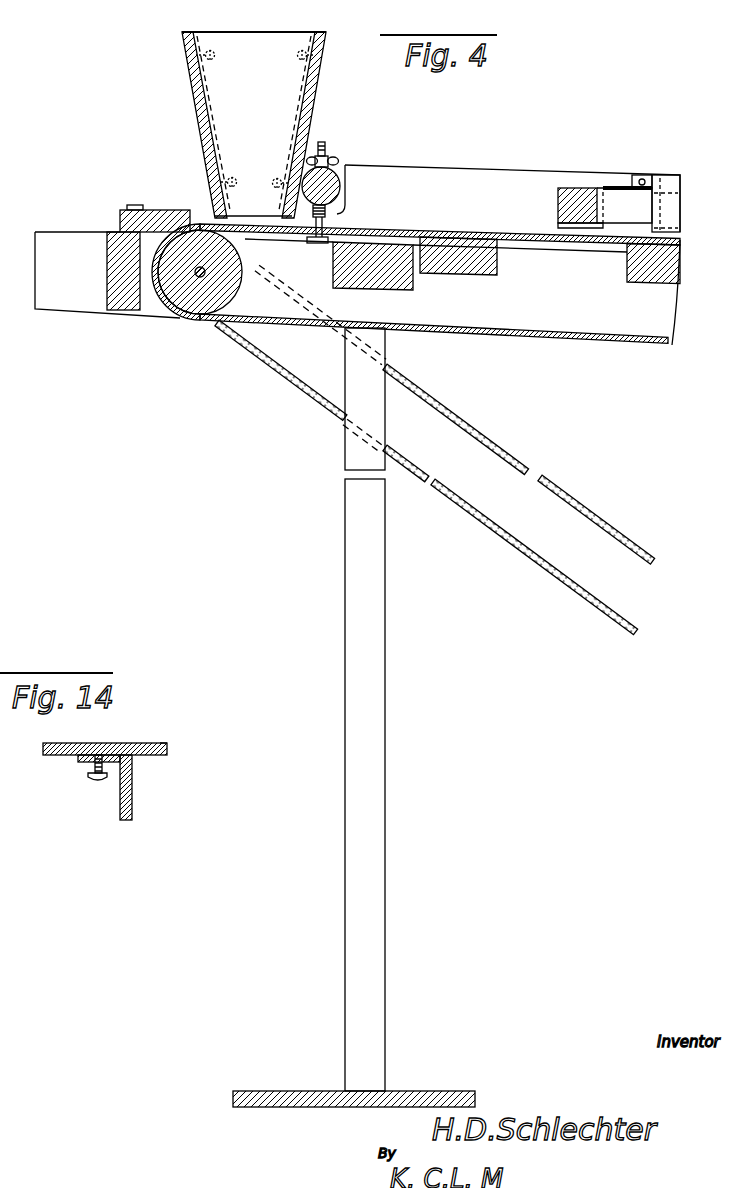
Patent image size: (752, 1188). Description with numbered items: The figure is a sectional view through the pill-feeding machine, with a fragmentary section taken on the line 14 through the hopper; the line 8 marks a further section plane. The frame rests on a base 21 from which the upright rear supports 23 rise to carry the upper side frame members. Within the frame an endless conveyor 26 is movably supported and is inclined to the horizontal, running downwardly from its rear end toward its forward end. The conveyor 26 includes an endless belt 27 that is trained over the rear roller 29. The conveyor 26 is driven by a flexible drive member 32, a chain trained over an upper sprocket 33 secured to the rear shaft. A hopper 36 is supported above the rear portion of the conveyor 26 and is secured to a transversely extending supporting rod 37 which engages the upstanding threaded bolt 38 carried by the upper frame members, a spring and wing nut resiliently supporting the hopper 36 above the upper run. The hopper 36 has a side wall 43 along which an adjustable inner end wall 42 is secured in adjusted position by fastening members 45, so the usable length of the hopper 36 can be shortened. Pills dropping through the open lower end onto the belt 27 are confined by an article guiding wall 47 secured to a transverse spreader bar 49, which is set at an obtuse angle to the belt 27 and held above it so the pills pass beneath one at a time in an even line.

In FIG. 4, the section line 8- 8 is at (254, 214).
In FIG. 4, the section line 14- 14 is at (170, 63).
In FIG. 4, the base 21 is at (271, 1094).
In FIG. 4, the upright rear supports 23 is at (384, 737).
In FIG. 4, the endless conveyor 26 is at (606, 346).
In FIG. 4, the endless belt 27 is at (568, 244).
In FIG. 4, the rear roller 29 is at (176, 318).
In FIG. 4, the flexible drive member 32 is at (503, 455).
In FIG. 4, the upper sprocket 33 is at (157, 315).
In FIG. 4, the hopper 36 is at (324, 78).
In FIG. 14, the hopper 36 is at (74, 740).
In FIG. 4, the supporting rod 37 is at (343, 158).
In FIG. 4, the threaded bolt 38 is at (325, 145).
In FIG. 4, the adjustable inner end wall 42 is at (317, 100).
In FIG. 14, the adjustable inner end wall 42 is at (132, 806).
In FIG. 4, the side wall 43 is at (203, 123).
In FIG. 14, the side wall 43 is at (153, 743).
In FIG. 14, the fastening members 45 is at (100, 780).
In FIG. 4, the article guiding wall 47 is at (467, 180).
In FIG. 4, the spreader bar 49 is at (583, 200).